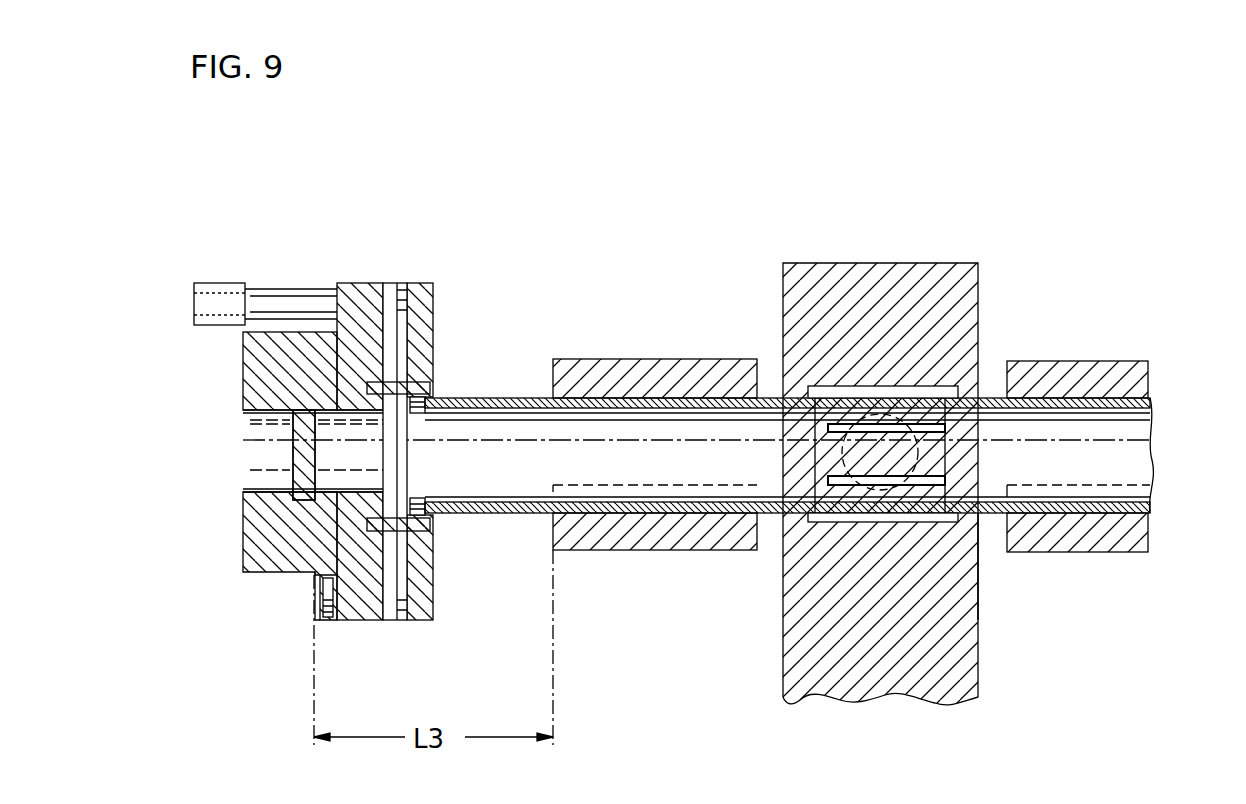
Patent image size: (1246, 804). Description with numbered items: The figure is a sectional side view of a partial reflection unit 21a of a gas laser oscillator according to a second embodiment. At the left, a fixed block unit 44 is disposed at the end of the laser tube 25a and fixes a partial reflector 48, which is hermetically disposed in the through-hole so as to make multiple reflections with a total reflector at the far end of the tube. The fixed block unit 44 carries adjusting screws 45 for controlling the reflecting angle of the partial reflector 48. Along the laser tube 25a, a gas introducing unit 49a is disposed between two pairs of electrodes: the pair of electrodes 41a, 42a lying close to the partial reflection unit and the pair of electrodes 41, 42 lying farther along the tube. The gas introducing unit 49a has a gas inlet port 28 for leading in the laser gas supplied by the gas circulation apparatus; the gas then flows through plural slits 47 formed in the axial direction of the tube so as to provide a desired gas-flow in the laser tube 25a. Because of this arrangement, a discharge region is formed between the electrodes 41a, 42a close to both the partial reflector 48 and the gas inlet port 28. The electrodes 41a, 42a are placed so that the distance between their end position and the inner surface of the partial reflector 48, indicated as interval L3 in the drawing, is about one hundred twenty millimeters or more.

The adjusting screws 45 is at (222, 290).
The fixed block unit 44 is at (363, 283).
The partial reflector 48 is at (300, 458).
The laser tube 25a is at (1150, 405).
The electrode 41a is at (624, 358).
The electrode 42a is at (618, 551).
The partial reflection unit 21a is at (753, 252).
The gas introducing unit 49a is at (905, 265).
The gas inlet port 28 is at (815, 492).
The slits 47 is at (975, 560).
The electrode 41 is at (1108, 369).
The electrode 42 is at (1095, 545).